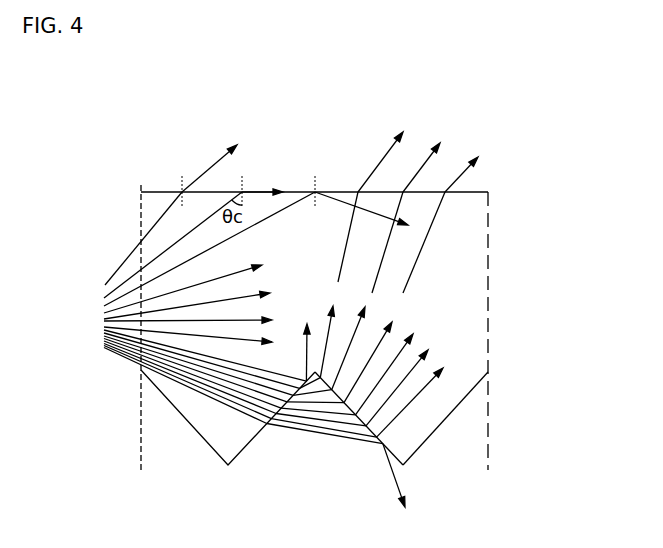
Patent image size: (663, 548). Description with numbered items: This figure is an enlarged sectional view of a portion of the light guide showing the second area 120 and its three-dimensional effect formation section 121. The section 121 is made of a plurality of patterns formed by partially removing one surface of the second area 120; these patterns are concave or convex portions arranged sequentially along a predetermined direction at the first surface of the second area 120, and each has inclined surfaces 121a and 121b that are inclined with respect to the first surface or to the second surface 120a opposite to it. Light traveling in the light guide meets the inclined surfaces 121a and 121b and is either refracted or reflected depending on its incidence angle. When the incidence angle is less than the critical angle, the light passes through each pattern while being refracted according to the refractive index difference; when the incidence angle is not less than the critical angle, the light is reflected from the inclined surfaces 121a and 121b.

The second area 120 is at (476, 191).
The second surface 120a is at (489, 210).
The three-dimensional effect formation section 121 is at (428, 432).
The inclined surface 121a is at (237, 458).
The inclined surface 121b is at (372, 448).